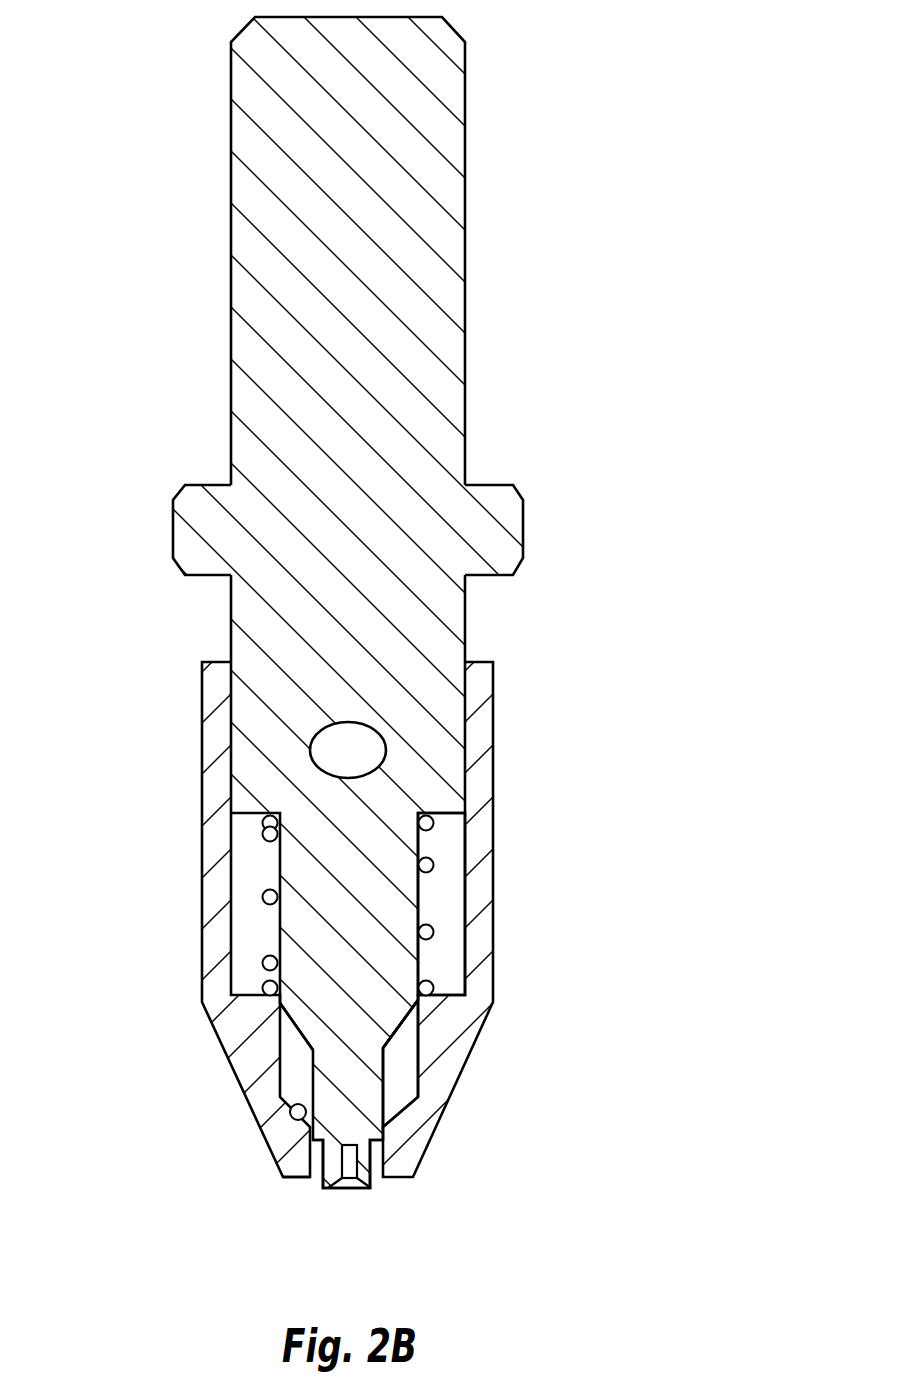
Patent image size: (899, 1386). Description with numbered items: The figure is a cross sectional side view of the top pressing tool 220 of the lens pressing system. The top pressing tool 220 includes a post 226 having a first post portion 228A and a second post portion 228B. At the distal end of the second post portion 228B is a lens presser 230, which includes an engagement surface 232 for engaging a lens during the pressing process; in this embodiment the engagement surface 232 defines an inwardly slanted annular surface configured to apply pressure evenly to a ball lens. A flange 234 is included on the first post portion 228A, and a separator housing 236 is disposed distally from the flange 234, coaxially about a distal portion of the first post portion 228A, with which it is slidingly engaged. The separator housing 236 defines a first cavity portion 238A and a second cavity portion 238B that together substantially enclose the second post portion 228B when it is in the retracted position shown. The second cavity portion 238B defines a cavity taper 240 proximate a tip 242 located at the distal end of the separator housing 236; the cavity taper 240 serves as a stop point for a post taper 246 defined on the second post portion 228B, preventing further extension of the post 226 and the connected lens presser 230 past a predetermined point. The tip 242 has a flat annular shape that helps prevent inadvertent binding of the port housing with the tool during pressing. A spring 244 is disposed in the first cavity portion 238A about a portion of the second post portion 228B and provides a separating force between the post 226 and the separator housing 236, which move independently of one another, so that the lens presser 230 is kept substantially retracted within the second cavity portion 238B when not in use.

The top pressing tool 220 is at (449, 641).
The post 226 is at (449, 641).
The first post portion 228A is at (427, 425).
The second post portion 228B is at (377, 893).
The flange 234 is at (187, 483).
The separator housing 236 is at (213, 745).
The first cavity portion 238A is at (432, 842).
The second cavity portion 238B is at (395, 1088).
The cavity taper 240 is at (290, 1120).
The tip 242 is at (297, 1178).
The spring 244 is at (262, 896).
The post taper 246 is at (377, 1031).
The lens presser 230 is at (382, 1190).
The engagement surface 232 is at (342, 1190).